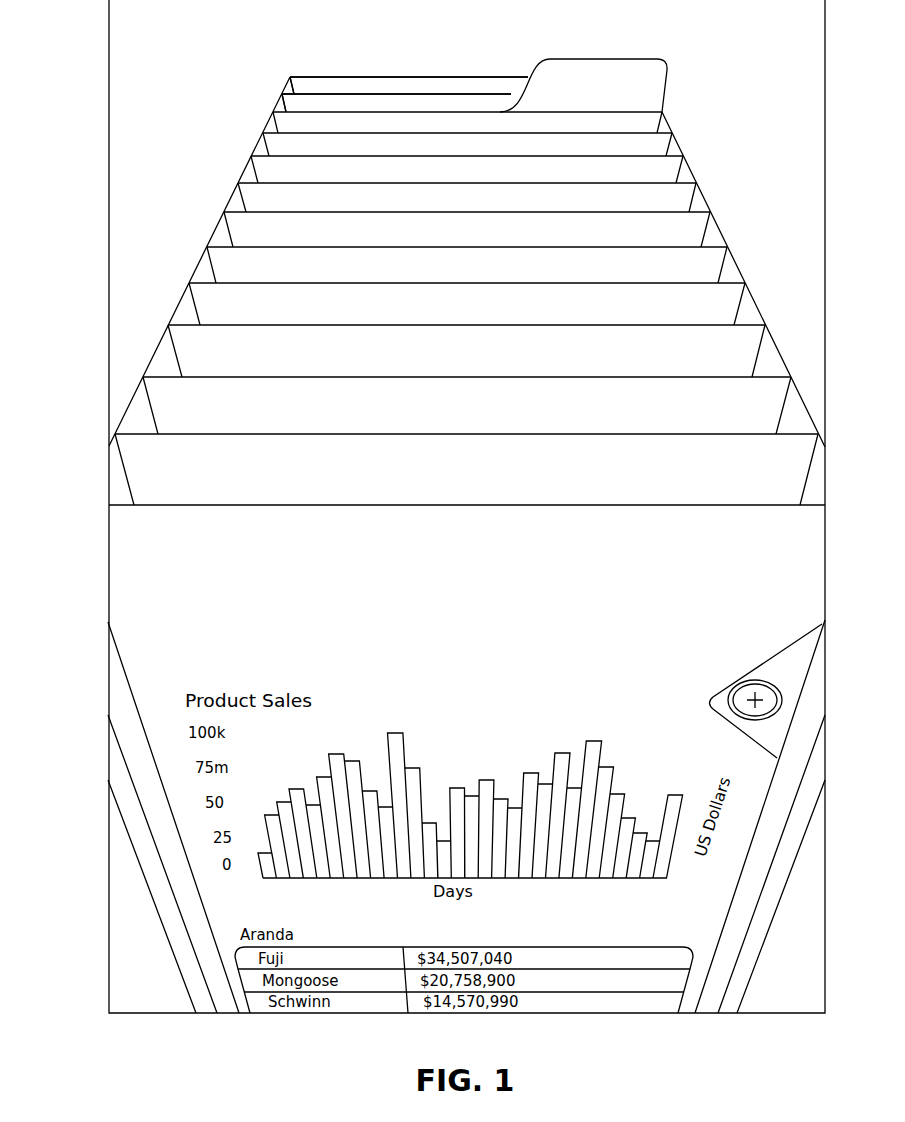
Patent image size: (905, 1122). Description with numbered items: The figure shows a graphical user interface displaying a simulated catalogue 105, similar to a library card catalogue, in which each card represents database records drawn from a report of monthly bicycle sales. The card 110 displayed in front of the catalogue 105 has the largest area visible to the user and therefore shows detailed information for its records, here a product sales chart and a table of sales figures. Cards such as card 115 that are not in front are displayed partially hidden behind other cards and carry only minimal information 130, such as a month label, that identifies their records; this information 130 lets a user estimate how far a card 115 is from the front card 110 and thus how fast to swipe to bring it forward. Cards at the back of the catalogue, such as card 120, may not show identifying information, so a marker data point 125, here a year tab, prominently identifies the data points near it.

The catalogue 105 is at (170, 930).
The front card 110 is at (127, 678).
The card 115 is at (193, 297).
The back card 120 is at (280, 100).
The marker data point 125 is at (668, 80).
The minimal identifying information 130 is at (598, 357).